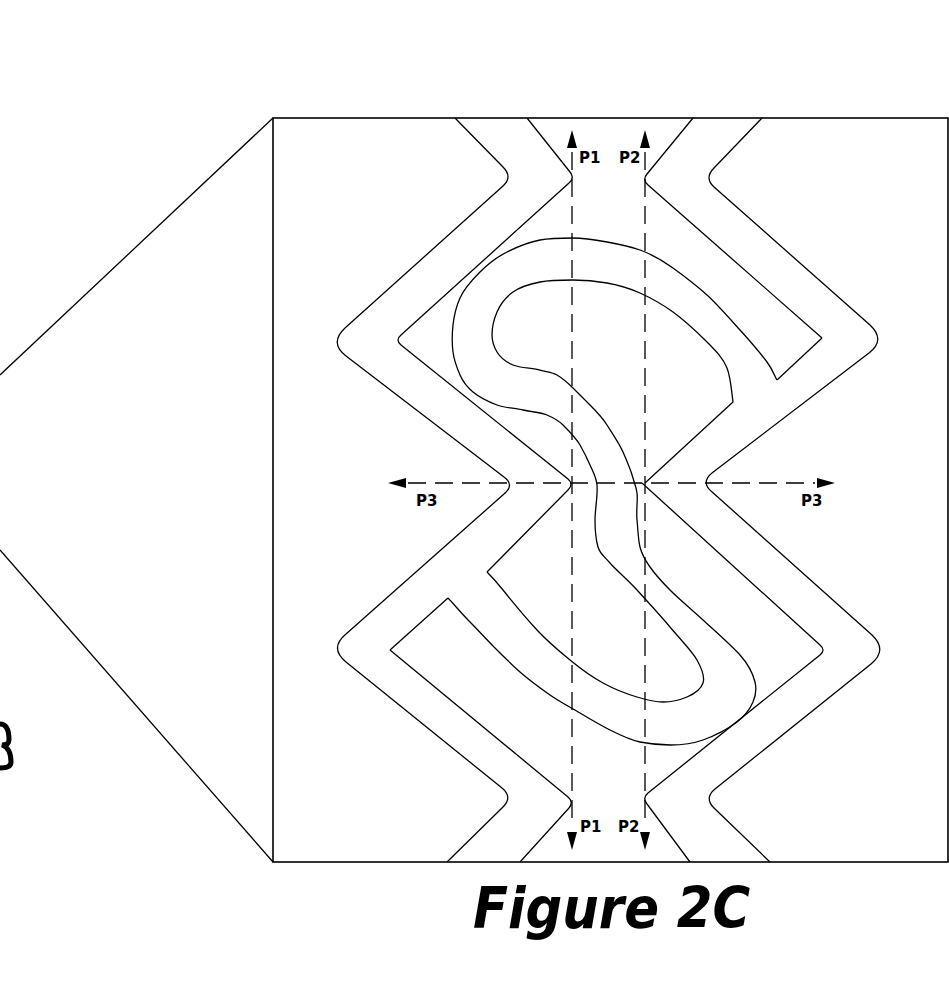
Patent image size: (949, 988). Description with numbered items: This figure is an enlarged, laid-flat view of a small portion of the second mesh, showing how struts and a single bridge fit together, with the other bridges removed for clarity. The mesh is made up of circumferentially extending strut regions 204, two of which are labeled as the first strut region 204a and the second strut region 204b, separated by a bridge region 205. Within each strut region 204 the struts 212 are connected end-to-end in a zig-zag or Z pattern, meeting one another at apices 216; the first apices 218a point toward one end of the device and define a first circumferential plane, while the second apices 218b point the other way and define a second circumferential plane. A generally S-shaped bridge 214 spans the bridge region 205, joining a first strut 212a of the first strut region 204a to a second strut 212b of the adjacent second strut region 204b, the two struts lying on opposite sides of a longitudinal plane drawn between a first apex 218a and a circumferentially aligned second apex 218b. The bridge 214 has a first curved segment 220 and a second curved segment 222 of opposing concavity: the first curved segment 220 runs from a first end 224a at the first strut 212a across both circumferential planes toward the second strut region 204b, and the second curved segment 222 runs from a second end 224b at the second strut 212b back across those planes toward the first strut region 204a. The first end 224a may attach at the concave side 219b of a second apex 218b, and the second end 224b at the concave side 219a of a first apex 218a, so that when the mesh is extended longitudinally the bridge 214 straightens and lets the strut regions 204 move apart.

The strut regions 204 is at (606, 89).
The first strut region 204a is at (568, 108).
The second strut region 204b is at (873, 108).
The bridge regions 205 is at (770, 63).
The struts 212 is at (470, 213).
The first strut 212a is at (400, 580).
The second strut 212b is at (822, 400).
The bridge 214 is at (597, 408).
The apices 216 is at (881, 650).
The first apices 218a is at (572, 180).
The second apices 218b is at (645, 182).
The concave side of first apex 219a is at (822, 338).
The concave side of second apex 219b is at (390, 650).
The first curved segment 220 is at (615, 690).
The second curved segment 222 is at (605, 282).
The first end 224a is at (468, 582).
The second end 224b is at (754, 398).